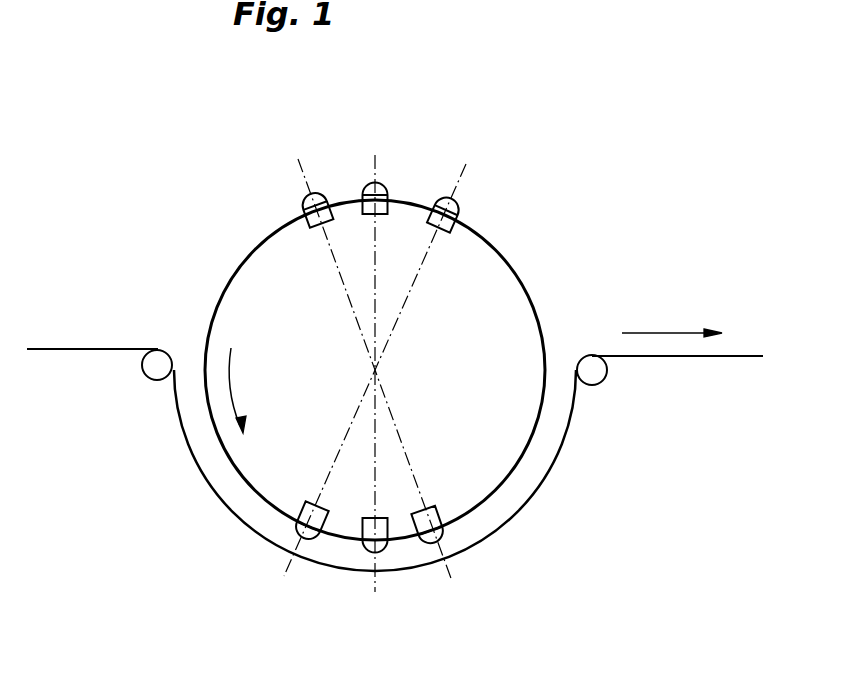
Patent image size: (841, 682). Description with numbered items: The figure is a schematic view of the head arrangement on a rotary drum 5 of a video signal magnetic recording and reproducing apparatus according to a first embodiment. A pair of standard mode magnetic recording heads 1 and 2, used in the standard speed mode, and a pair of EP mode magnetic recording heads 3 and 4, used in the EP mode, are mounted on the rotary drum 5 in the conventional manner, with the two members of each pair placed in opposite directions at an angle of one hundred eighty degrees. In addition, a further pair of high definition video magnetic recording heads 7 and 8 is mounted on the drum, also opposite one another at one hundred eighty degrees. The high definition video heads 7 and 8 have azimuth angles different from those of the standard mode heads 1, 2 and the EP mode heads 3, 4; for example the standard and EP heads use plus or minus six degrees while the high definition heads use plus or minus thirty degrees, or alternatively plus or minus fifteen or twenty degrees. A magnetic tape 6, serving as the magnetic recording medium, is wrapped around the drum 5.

The standard mode magnetic recording head 1 is at (385, 182).
The standard mode magnetic recording head 2 is at (380, 545).
The EP mode magnetic recording head 3 is at (318, 193).
The EP mode magnetic recording head 4 is at (442, 530).
The rotary drum 5 is at (522, 280).
The magnetic tape 6 is at (690, 358).
The high definition video magnetic recording head 7 is at (458, 205).
The high definition video magnetic recording head 8 is at (308, 517).